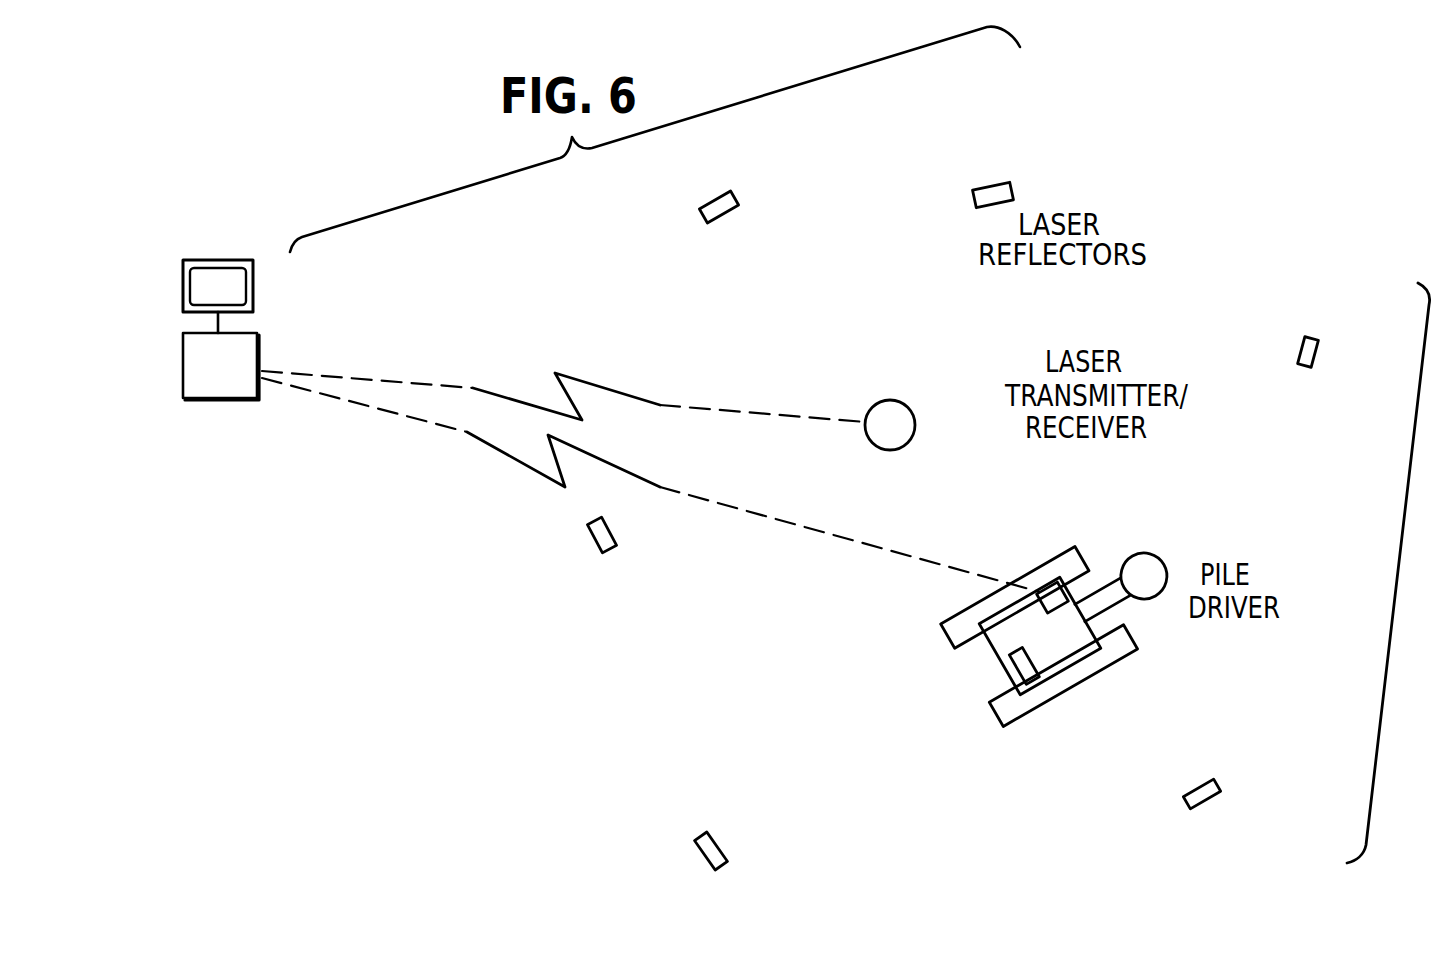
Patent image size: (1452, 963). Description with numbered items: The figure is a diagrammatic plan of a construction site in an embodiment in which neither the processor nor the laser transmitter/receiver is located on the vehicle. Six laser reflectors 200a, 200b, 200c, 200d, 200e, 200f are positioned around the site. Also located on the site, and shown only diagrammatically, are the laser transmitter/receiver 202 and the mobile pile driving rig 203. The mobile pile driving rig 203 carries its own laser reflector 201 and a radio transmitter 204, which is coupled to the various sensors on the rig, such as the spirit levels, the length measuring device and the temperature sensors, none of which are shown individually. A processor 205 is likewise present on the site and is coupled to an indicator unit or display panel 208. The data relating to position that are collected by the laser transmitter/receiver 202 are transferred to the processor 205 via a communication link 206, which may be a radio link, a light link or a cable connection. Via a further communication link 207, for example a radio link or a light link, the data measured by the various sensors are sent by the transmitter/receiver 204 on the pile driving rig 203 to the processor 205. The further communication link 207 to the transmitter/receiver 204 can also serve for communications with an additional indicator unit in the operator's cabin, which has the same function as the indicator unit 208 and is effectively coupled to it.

The laser reflector 200a is at (992, 188).
The laser reflector 200b is at (1312, 345).
The laser reflector 200c is at (1205, 795).
The laser reflector 200d is at (724, 862).
The laser reflector 200e is at (595, 542).
The laser reflector 200f is at (728, 158).
The laser reflector 201 is at (1010, 667).
The laser transmitter/receiver 202 is at (900, 420).
The mobile pile driving rig 203 is at (1083, 647).
The radio transmitter 204 is at (1047, 596).
The processor 205 is at (202, 388).
The communication link 206 is at (703, 408).
The further communication link 207 is at (765, 515).
The indicator unit or display panel 208 is at (237, 283).